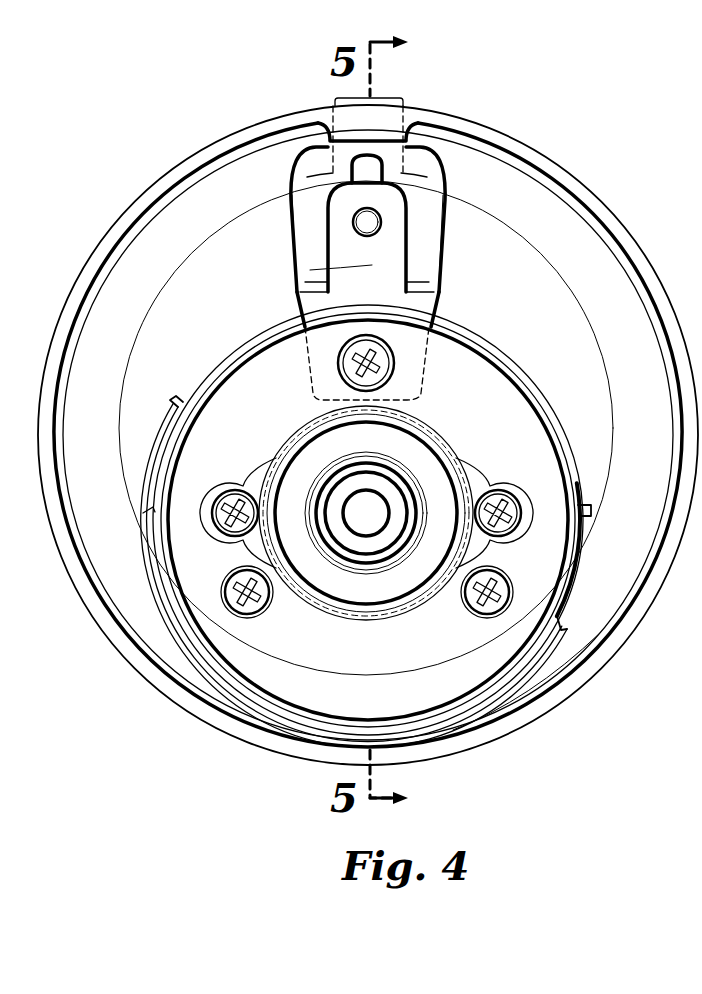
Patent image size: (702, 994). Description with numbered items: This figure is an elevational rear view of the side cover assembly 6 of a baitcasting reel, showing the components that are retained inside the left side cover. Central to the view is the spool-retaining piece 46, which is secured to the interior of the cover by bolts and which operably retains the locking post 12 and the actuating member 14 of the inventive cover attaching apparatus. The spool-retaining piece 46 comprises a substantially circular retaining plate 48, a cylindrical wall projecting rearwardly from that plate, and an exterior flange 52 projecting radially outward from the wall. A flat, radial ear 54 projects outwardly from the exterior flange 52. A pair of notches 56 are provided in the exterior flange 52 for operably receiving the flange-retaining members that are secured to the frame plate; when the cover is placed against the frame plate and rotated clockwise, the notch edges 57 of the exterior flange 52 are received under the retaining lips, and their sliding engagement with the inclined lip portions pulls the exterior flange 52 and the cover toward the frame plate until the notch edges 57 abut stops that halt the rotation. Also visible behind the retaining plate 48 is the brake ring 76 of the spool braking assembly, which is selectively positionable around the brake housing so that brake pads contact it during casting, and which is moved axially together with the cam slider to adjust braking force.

The side cover assembly 6 is at (576, 158).
The locking post 12 is at (372, 224).
The actuating member 14 is at (418, 160).
The spool-retaining piece 46 is at (308, 668).
The circular retaining plate 48 is at (420, 675).
The exterior flange 52 is at (278, 310).
The radial ear 54 is at (372, 266).
The notches 56 is at (160, 440).
The notch edges 57 is at (178, 404).
The brake ring 76 is at (284, 440).